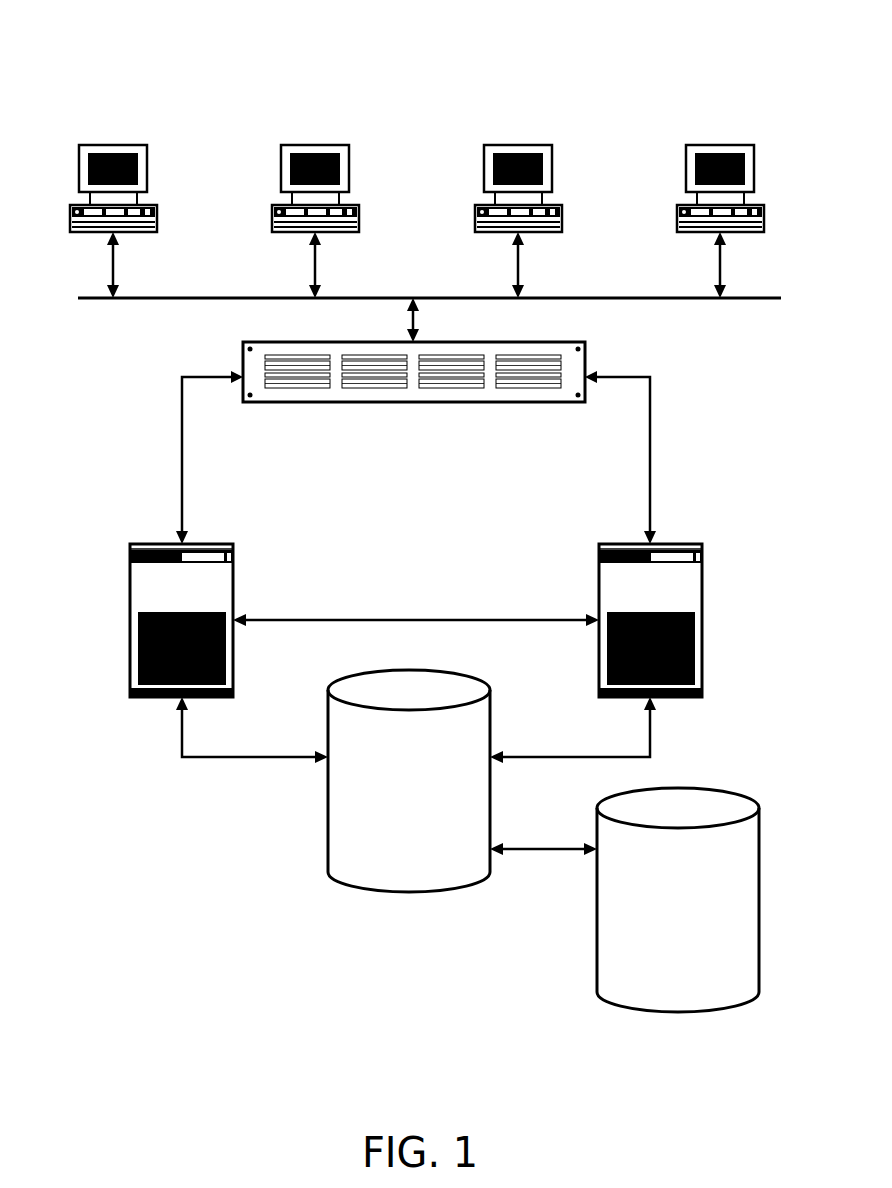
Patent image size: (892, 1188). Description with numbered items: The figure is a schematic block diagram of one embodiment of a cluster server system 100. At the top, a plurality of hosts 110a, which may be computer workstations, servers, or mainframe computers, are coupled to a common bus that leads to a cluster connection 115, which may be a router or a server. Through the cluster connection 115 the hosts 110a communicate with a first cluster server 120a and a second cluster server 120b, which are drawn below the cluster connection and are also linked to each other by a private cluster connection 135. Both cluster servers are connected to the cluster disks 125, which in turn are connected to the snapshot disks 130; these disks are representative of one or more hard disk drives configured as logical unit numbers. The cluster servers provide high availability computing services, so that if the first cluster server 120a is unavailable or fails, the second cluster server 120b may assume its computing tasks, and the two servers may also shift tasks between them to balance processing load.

The cluster server system 100 is at (78, 36).
The host 110a is at (147, 147).
The cluster connection 115 is at (585, 345).
The first cluster server 120a is at (233, 547).
The second cluster server 120b is at (702, 547).
The cluster disks 125 is at (409, 781).
The snapshot disks 130 is at (678, 900).
The private cluster connection 135 is at (433, 620).